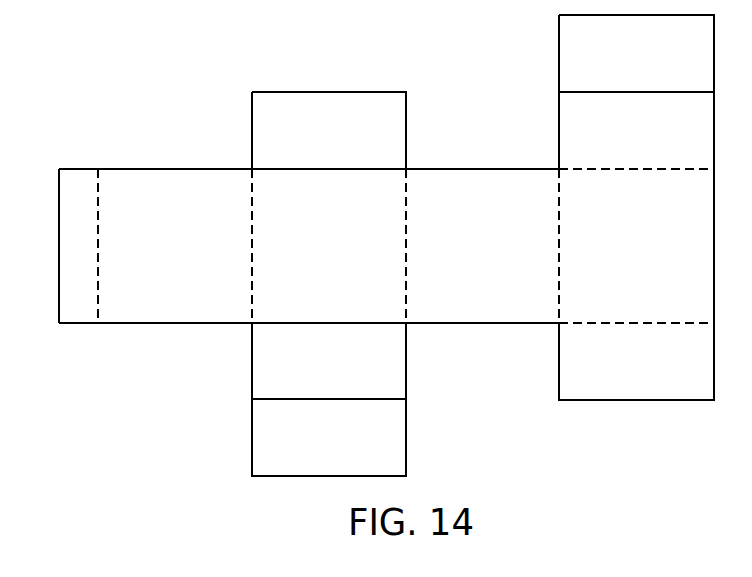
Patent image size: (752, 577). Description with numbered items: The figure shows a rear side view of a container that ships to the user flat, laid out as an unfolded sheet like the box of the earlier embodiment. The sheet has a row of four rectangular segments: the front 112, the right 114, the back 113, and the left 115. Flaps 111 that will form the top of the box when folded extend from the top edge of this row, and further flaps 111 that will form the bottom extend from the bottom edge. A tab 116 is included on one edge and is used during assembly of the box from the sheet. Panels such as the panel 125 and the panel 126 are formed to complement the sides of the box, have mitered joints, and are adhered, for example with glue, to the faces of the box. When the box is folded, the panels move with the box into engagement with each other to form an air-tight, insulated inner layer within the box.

The flaps 111 is at (312, 144).
The front 112 is at (467, 259).
The back 113 is at (157, 259).
The right 114 is at (619, 259).
The left 115 is at (312, 259).
The tab 116 is at (68, 188).
The panel 125 is at (619, 67).
The panel 126 is at (312, 450).